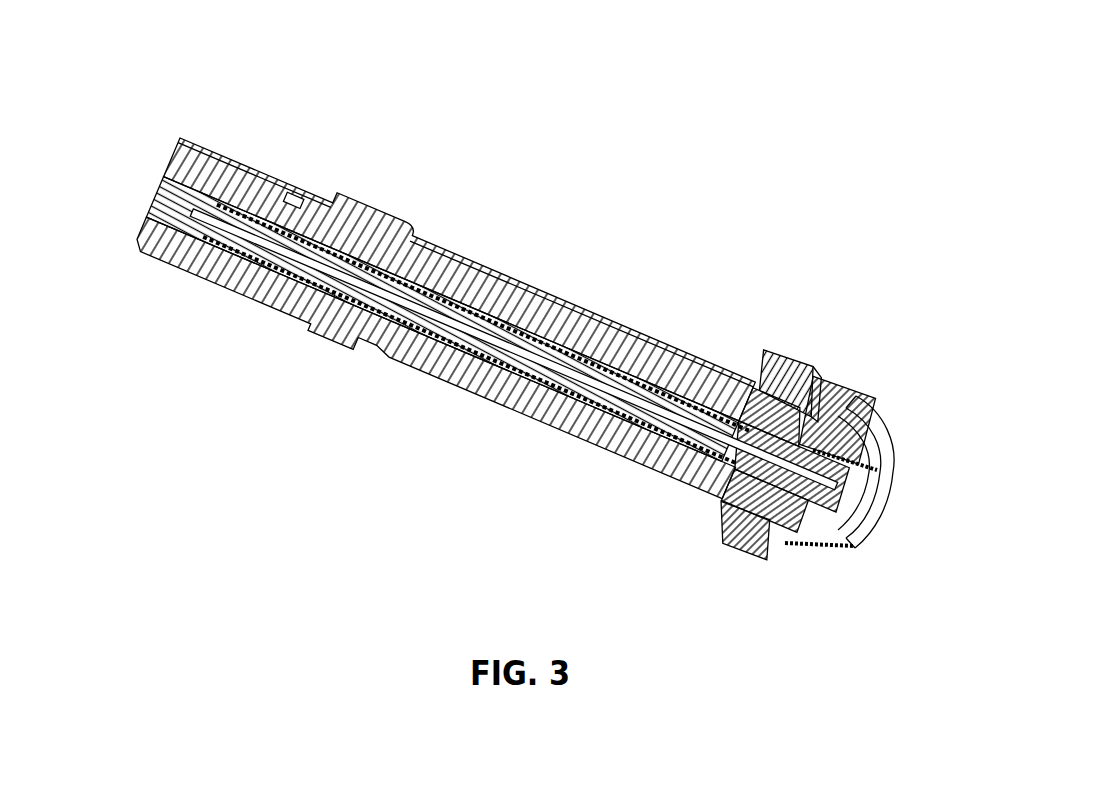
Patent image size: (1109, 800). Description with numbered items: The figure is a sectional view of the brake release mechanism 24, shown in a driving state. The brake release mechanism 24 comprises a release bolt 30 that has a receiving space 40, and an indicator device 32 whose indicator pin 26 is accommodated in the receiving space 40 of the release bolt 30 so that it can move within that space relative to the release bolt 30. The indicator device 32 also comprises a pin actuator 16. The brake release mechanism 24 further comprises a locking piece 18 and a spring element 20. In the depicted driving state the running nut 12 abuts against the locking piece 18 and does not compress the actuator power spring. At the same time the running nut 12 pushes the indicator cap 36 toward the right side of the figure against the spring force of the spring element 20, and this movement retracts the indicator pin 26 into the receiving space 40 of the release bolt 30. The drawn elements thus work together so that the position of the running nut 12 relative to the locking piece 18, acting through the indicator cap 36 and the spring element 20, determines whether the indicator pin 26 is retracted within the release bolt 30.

The running nut 12 is at (783, 350).
The pin actuator 16 is at (828, 565).
The locking piece 18 is at (818, 410).
The spring element 20 is at (598, 417).
The brake release mechanism 24 is at (848, 186).
The indicator pin 26 is at (413, 330).
The release bolt 30 is at (224, 276).
The indicator device 32 is at (901, 503).
The indicator cap 36 is at (890, 447).
The receiving space 40 is at (158, 170).